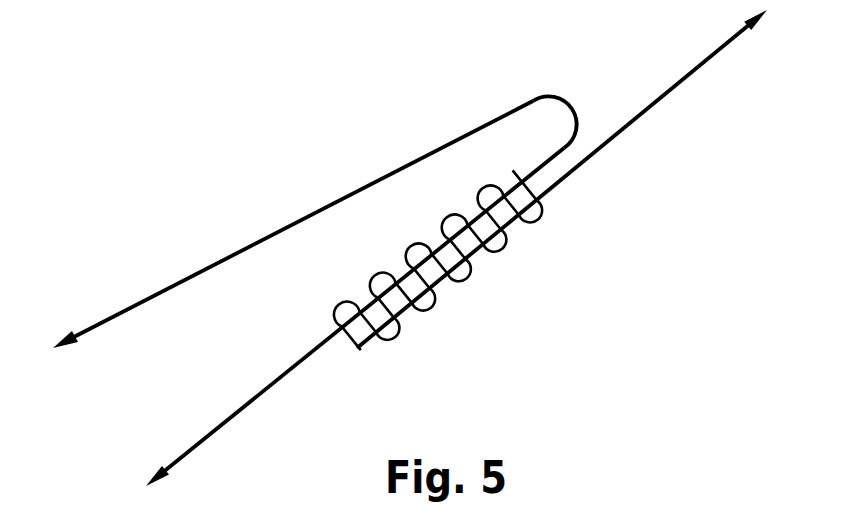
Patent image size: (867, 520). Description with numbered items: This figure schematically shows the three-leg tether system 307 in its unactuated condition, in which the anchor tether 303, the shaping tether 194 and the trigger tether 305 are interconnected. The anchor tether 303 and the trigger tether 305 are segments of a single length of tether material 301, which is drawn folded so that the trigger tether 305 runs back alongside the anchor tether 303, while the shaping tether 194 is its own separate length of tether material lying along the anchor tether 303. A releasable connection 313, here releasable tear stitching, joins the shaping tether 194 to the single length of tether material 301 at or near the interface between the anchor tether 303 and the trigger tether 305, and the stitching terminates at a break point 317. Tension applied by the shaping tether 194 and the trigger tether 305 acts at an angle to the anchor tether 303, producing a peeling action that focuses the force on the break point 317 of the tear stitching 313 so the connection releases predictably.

The shaping tether 194 is at (628, 120).
The single length of tether material 301 is at (490, 122).
The anchor tether 303 is at (238, 408).
The trigger tether 305 is at (205, 268).
The three-leg tether system 307 is at (315, 262).
The releasable connection 313 is at (424, 302).
The break point 317 is at (348, 348).